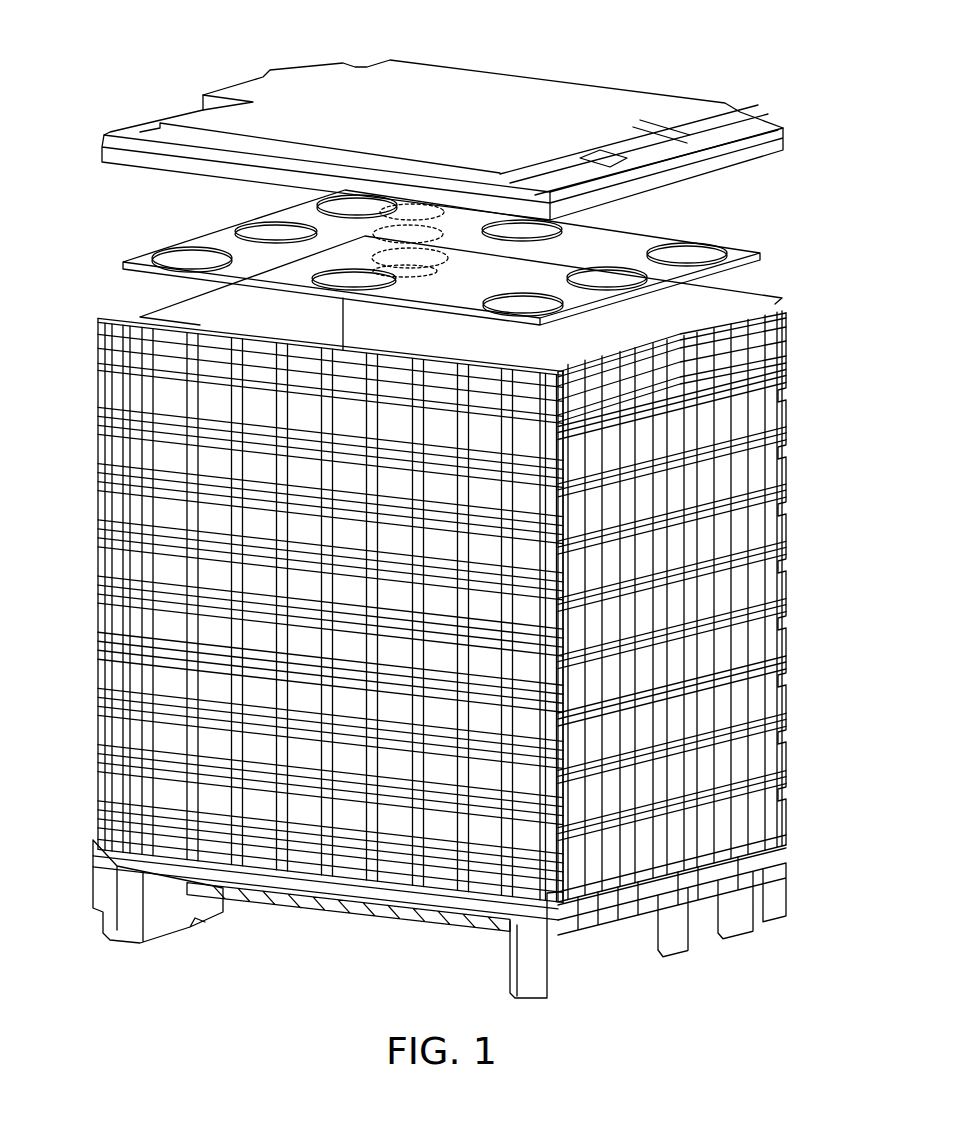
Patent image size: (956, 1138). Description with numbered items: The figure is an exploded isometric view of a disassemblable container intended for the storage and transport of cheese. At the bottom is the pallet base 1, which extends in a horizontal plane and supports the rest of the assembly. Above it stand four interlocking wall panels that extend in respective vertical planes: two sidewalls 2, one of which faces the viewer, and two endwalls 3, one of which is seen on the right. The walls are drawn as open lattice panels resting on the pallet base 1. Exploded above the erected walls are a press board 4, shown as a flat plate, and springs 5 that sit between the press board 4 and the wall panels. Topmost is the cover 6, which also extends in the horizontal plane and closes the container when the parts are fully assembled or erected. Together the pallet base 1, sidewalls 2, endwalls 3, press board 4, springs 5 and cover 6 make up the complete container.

The pallet base 1 is at (128, 892).
The sidewall 2 is at (230, 546).
The endwall 3 is at (628, 622).
The press board 4 is at (188, 257).
The springs 5 is at (365, 236).
The cover 6 is at (600, 130).